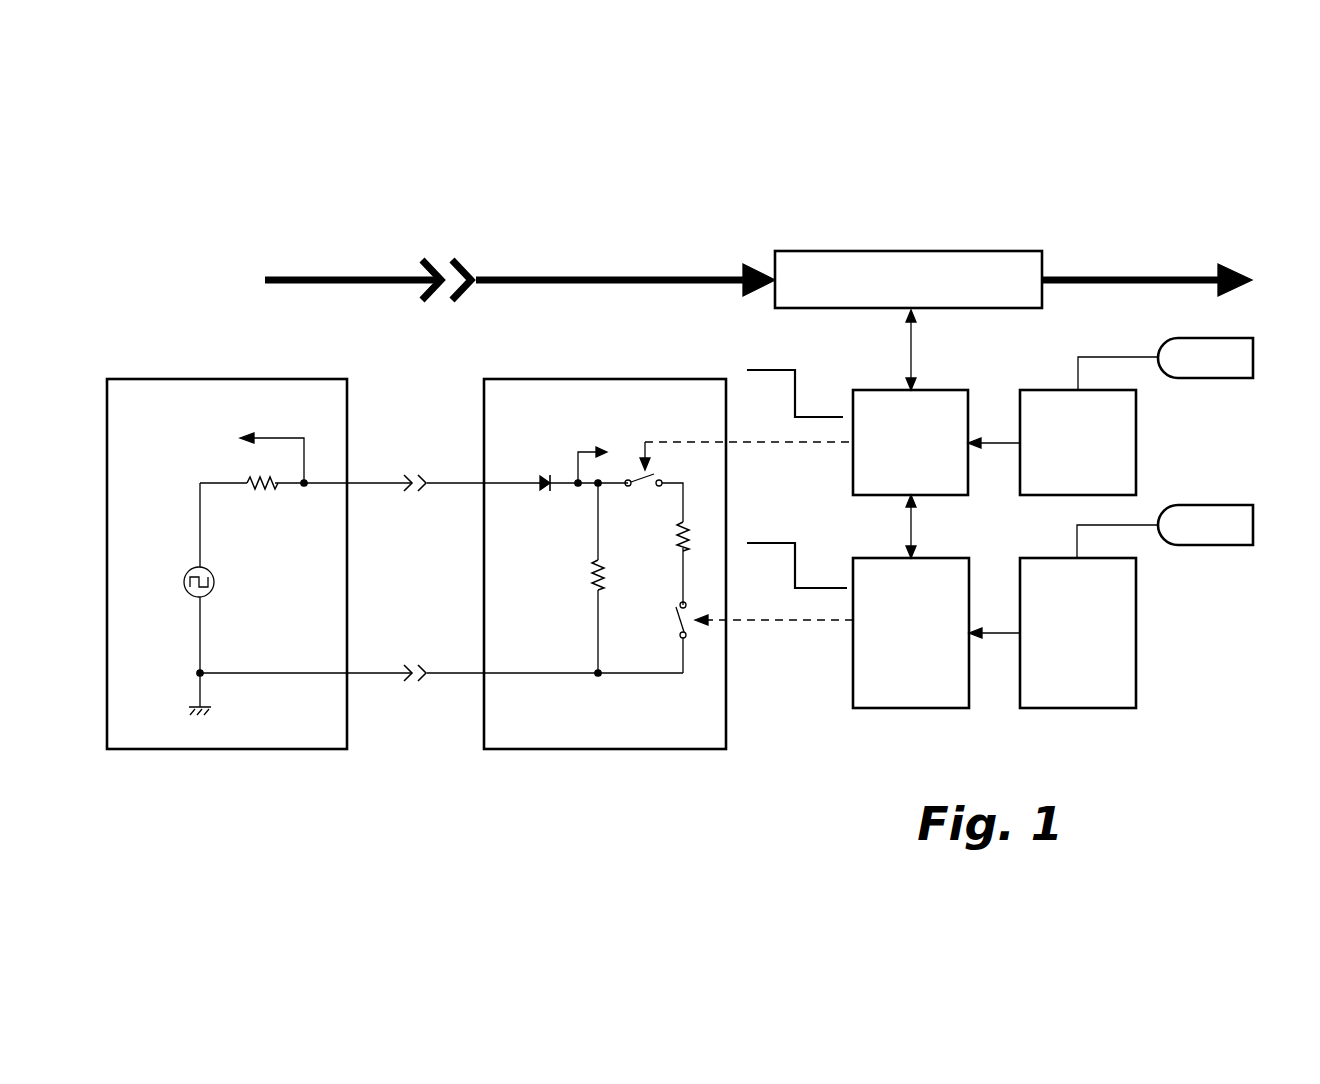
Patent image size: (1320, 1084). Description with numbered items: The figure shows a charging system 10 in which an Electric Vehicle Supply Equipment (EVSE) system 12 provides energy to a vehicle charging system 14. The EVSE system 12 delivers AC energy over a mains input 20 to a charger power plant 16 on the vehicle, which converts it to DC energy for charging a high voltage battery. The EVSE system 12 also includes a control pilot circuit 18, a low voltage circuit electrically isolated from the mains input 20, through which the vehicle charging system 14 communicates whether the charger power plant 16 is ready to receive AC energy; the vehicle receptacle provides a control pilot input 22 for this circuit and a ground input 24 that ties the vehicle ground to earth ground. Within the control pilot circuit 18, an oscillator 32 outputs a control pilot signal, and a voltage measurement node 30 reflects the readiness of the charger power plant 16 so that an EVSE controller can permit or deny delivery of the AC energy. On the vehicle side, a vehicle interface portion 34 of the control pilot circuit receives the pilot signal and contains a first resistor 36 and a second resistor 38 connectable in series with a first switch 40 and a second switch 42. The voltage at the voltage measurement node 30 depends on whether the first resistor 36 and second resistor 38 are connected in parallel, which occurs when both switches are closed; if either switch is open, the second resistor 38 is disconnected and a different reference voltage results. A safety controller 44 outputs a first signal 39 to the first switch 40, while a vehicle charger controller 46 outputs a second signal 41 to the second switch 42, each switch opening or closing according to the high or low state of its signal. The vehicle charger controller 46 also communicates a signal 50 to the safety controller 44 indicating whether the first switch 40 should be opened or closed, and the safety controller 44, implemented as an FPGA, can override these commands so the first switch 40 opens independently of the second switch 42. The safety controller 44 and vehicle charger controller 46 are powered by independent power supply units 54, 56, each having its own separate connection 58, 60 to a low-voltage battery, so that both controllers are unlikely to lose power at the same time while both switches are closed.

The charging system 10 is at (1176, 136).
The Electric Vehicle Supply Equipment (EVSE) system 12 is at (598, 214).
The vehicle charging system 14 is at (1013, 251).
The charger power plant 16 is at (908, 249).
The control pilot circuit 18 is at (256, 558).
The mains input 20 is at (773, 272).
The control pilot input 22 is at (422, 490).
The ground input 24 is at (424, 670).
The voltage measurement node 30 is at (178, 379).
The oscillator 32 is at (183, 582).
The vehicle interface portion 34 is at (627, 547).
The first resistor 36 is at (596, 565).
The second resistor 38 is at (686, 527).
The first signal 39 is at (814, 388).
The first switch 40 is at (656, 477).
The second signal 41 is at (814, 558).
The second switch 42 is at (688, 640).
The safety controller 44 is at (970, 417).
The vehicle charger controller 46 is at (971, 588).
The signal 50 is at (913, 538).
The first power supply unit 54 is at (1138, 442).
The second power supply unit 56 is at (1138, 633).
The first connection to LV battery 58 is at (1255, 357).
The second connection to LV battery 60 is at (1255, 525).